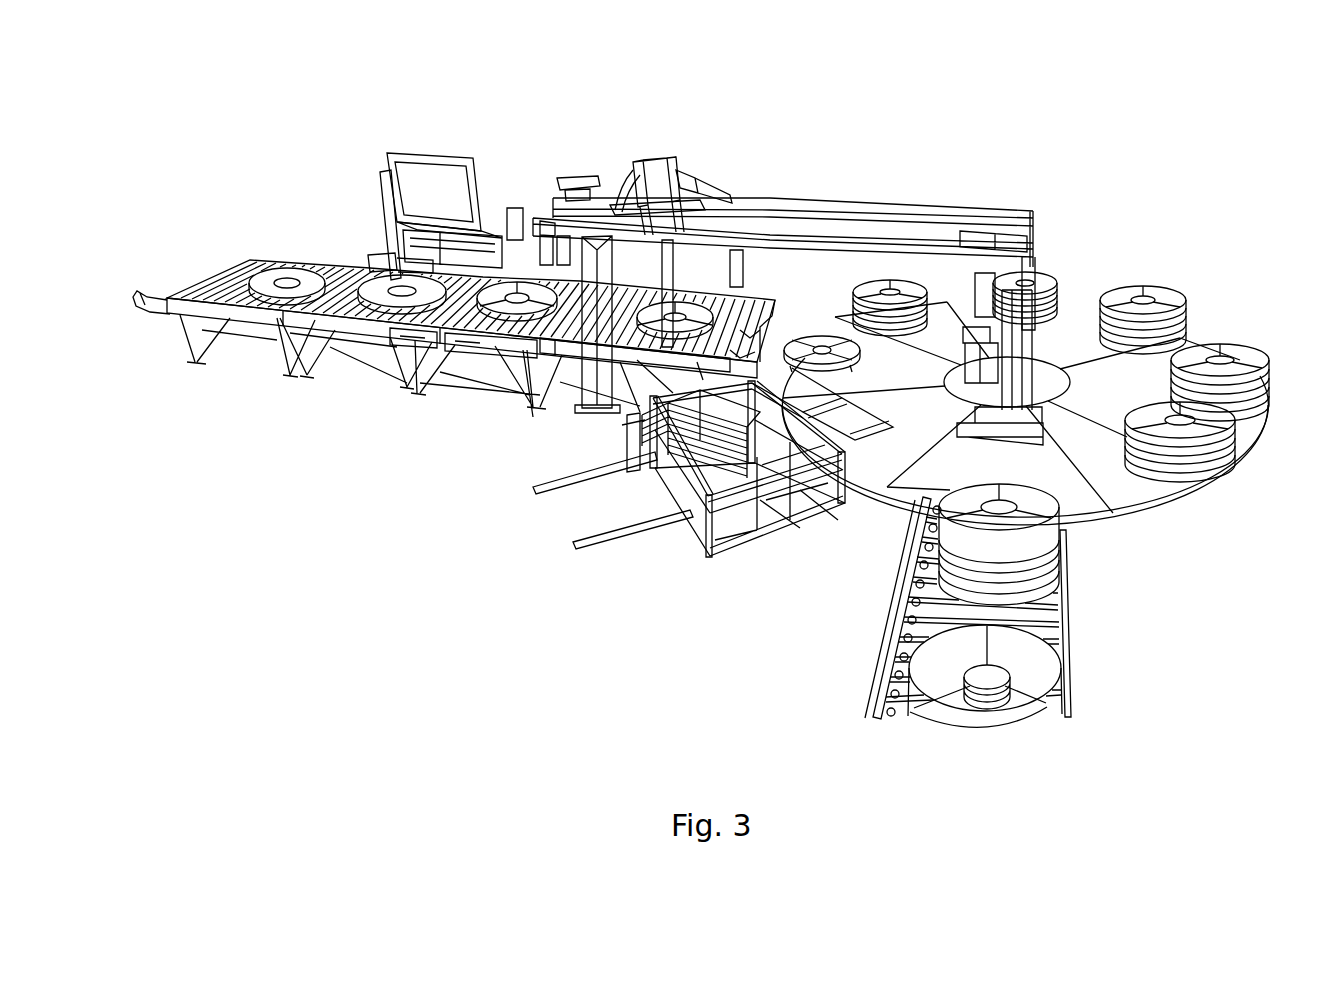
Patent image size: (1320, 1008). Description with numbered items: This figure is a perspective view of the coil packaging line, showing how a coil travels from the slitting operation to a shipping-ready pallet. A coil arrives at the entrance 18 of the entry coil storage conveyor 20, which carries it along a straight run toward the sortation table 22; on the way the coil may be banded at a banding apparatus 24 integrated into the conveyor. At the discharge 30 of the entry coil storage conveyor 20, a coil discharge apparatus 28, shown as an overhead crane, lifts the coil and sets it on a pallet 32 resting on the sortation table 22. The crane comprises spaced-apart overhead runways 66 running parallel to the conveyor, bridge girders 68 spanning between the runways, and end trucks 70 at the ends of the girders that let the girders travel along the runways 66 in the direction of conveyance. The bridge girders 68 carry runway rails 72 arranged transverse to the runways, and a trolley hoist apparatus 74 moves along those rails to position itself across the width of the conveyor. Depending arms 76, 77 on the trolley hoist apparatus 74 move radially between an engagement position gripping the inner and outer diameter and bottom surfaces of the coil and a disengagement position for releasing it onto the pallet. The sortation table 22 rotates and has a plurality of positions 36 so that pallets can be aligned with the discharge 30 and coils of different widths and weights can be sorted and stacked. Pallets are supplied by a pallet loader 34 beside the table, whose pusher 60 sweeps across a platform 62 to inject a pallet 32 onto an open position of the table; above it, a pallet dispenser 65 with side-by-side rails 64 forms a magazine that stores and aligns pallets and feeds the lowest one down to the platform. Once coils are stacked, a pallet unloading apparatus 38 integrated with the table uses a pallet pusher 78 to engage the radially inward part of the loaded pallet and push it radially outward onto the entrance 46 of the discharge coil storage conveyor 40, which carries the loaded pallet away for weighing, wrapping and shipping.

The entrance 18 is at (255, 260).
The entry coil storage conveyor 20 is at (181, 298).
The sortation table 22 is at (1083, 312).
The banding apparatus 24 is at (415, 150).
The coil discharge apparatus 28 is at (580, 187).
The discharge 30 is at (770, 300).
The pallet 32 is at (605, 476).
The pallet loader 34 is at (707, 543).
The positions 36 is at (1170, 500).
The pallet unloading apparatus 38 is at (1007, 337).
The discharge coil storage conveyor 40 is at (1057, 620).
The entrance 46 is at (1057, 527).
The pusher 60 is at (647, 490).
The platform 62 is at (805, 455).
The side-by-side rails 64 is at (787, 457).
The pallet dispenser 65 is at (625, 422).
The overhead runways 66 is at (818, 213).
The bridge girders 68 is at (612, 275).
The end truck 70 is at (622, 207).
The runway rails 72 is at (613, 272).
The trolley hoist apparatus 74 is at (653, 160).
The depending arm 76 is at (713, 243).
The depending arm 77 is at (793, 237).
The pallet pusher 78 is at (1127, 310).